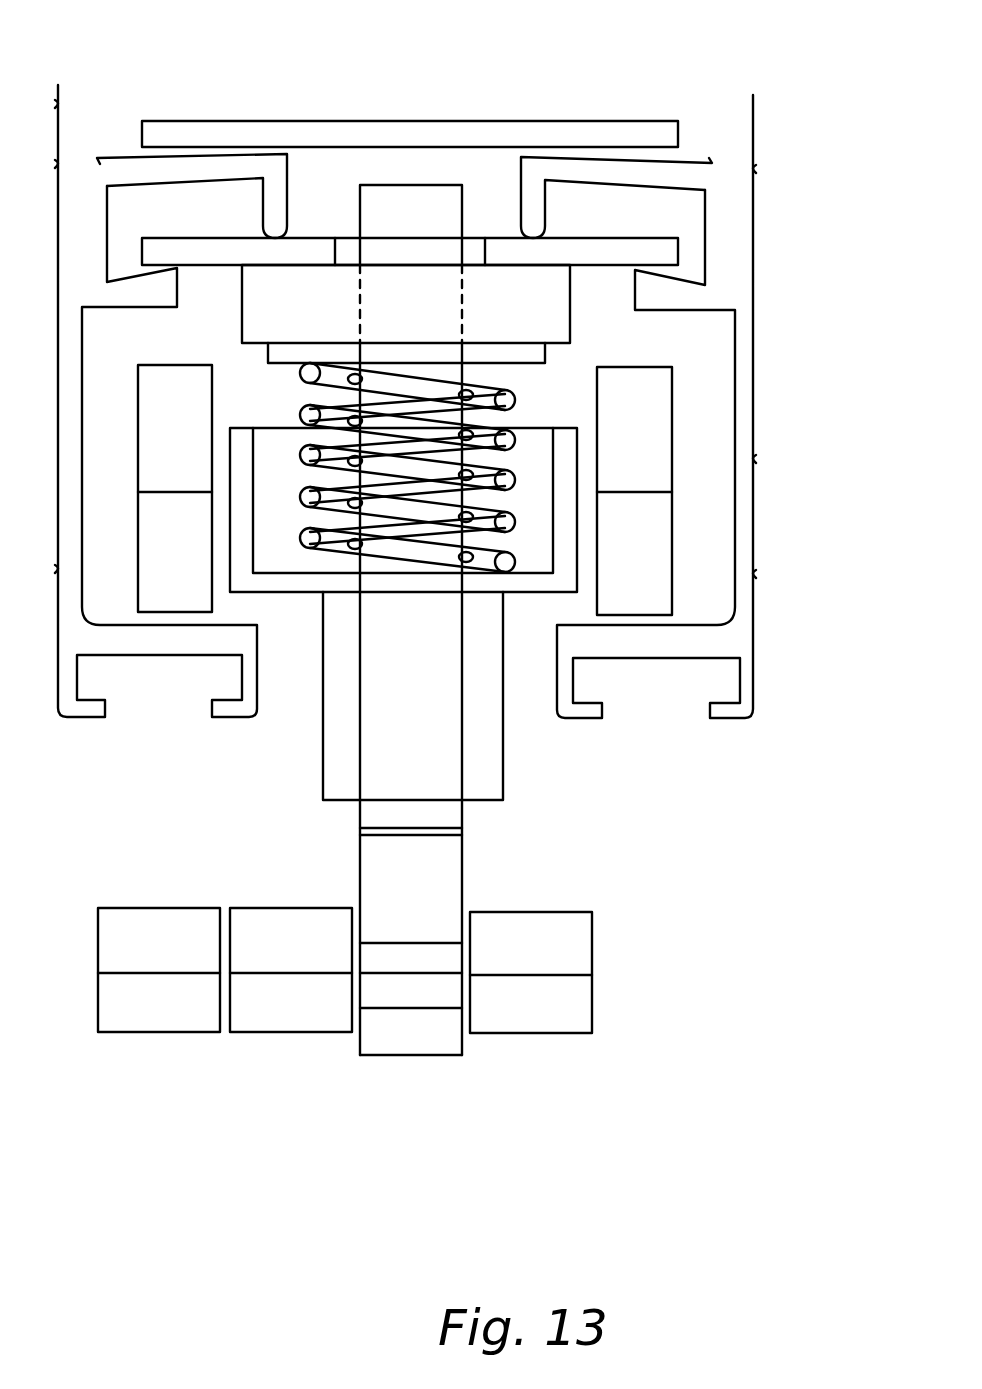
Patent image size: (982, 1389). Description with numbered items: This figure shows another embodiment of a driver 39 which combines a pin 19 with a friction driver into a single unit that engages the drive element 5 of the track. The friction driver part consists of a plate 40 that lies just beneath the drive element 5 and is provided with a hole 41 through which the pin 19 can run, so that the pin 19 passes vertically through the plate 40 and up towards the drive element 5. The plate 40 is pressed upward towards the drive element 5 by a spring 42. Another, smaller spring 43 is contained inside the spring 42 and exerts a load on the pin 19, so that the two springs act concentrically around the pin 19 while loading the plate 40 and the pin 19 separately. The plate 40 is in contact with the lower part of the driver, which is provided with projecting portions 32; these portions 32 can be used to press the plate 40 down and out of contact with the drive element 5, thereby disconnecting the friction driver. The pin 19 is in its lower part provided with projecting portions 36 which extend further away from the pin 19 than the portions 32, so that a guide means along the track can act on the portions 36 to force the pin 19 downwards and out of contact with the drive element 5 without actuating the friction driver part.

The driver 39 is at (336, 205).
The pin 19 is at (415, 210).
The hole 41 is at (433, 260).
The drive element 5 is at (657, 254).
The plate 40 is at (549, 316).
The spring 42 is at (513, 393).
The smaller spring 43 is at (453, 495).
The projecting portions 32 is at (540, 930).
The projecting portions 36 is at (173, 1017).